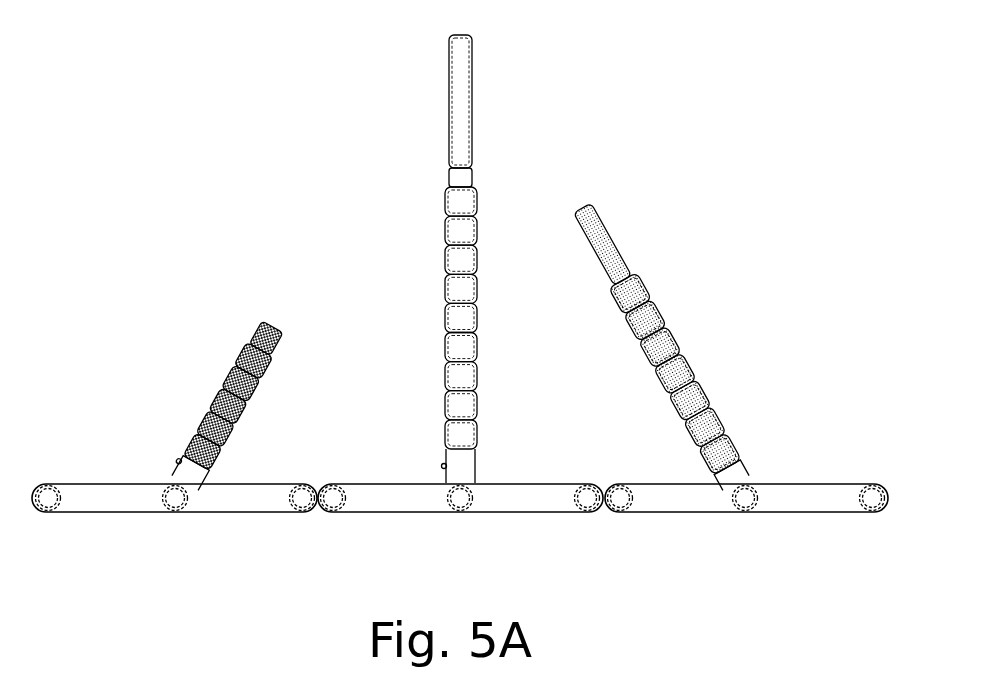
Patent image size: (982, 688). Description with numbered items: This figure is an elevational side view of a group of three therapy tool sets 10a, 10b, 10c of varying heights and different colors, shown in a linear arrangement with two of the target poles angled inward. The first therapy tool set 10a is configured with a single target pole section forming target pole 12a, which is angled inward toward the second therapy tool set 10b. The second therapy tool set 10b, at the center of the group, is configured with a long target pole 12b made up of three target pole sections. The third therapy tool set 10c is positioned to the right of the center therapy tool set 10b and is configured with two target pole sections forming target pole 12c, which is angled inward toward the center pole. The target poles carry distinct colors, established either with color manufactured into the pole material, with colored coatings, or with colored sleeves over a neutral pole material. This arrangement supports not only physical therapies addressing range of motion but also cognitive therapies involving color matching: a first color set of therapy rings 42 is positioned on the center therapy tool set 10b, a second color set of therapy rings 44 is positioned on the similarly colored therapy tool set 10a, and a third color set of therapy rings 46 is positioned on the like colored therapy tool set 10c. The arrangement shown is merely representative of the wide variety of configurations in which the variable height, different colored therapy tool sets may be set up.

The first therapy tool set 10a is at (115, 518).
The second therapy tool set 10b is at (506, 518).
The third therapy tool set 10c is at (818, 518).
The target pole 12a is at (194, 358).
The long target pole 12b is at (397, 259).
The target pole 12c is at (691, 322).
The first color set of therapy rings 42 is at (433, 317).
The second color set of therapy rings 44 is at (198, 377).
The third color set of therapy rings 46 is at (706, 354).